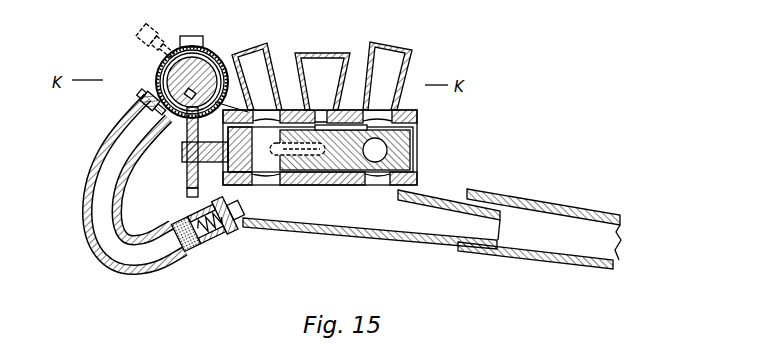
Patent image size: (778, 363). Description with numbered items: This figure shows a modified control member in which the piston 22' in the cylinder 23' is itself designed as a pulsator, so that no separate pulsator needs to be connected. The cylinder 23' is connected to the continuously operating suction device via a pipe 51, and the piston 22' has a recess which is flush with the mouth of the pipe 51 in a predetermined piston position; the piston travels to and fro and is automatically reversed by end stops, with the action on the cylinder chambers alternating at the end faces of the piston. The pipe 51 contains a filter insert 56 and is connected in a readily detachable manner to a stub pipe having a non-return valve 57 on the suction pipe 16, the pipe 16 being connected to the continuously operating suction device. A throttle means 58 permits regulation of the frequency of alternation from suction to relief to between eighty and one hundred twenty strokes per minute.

The pipe 16 is at (450, 213).
The piston 22' is at (158, 65).
The cylinder 23' is at (202, 70).
The pipe 51 is at (113, 240).
The filter insert 56 is at (183, 252).
The non-return valve 57 is at (225, 223).
The throttle means 58 is at (141, 98).